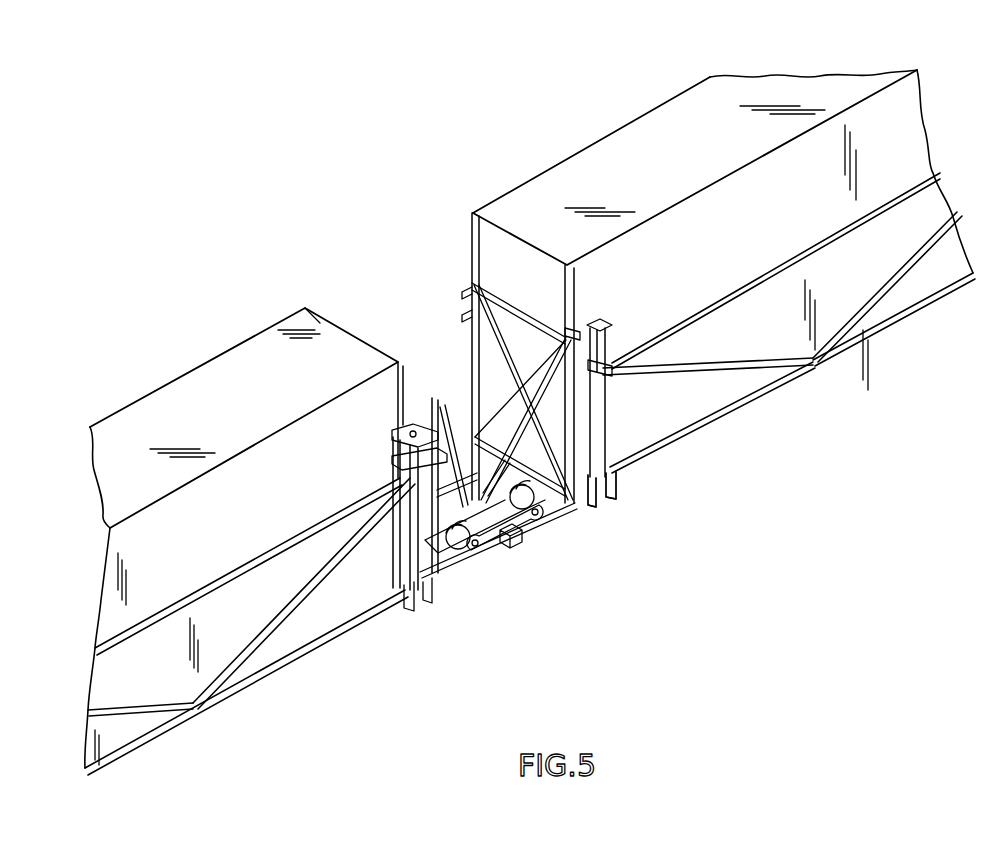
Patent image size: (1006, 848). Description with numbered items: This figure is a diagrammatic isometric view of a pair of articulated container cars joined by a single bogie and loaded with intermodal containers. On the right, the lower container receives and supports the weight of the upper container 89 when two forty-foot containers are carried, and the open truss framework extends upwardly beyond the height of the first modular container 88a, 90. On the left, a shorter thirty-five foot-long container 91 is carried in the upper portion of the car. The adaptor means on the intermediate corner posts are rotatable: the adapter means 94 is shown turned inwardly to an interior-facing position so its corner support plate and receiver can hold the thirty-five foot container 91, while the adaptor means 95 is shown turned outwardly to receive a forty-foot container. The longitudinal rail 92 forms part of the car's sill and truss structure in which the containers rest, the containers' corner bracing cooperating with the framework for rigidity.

The first modular container 88a is at (687, 415).
The upper container 89 is at (687, 177).
The first modular container 90 is at (243, 637).
The thirty-five foot-long container 91 is at (250, 407).
The longitudinal bottom rail 92 is at (347, 610).
The adapter means turned inwardly 94 is at (390, 460).
The adaptor means turned outwardly 95 is at (617, 334).